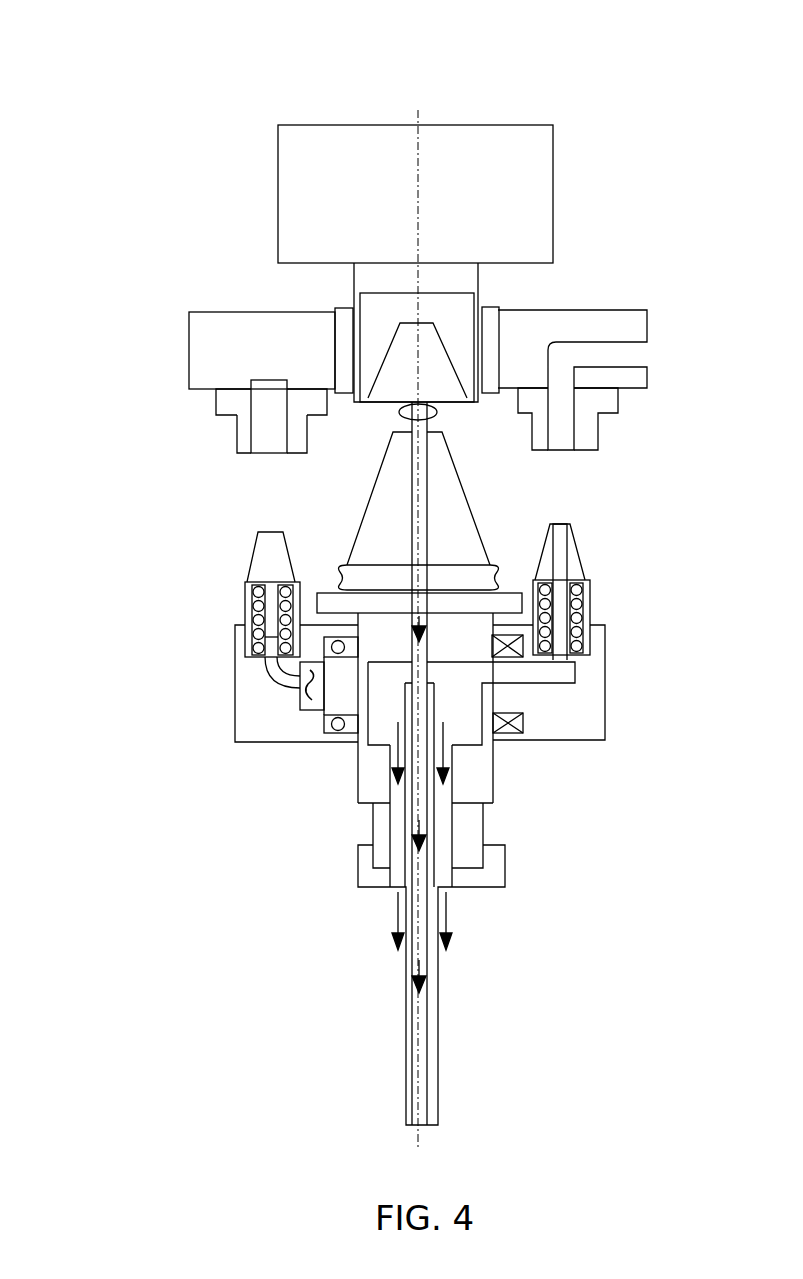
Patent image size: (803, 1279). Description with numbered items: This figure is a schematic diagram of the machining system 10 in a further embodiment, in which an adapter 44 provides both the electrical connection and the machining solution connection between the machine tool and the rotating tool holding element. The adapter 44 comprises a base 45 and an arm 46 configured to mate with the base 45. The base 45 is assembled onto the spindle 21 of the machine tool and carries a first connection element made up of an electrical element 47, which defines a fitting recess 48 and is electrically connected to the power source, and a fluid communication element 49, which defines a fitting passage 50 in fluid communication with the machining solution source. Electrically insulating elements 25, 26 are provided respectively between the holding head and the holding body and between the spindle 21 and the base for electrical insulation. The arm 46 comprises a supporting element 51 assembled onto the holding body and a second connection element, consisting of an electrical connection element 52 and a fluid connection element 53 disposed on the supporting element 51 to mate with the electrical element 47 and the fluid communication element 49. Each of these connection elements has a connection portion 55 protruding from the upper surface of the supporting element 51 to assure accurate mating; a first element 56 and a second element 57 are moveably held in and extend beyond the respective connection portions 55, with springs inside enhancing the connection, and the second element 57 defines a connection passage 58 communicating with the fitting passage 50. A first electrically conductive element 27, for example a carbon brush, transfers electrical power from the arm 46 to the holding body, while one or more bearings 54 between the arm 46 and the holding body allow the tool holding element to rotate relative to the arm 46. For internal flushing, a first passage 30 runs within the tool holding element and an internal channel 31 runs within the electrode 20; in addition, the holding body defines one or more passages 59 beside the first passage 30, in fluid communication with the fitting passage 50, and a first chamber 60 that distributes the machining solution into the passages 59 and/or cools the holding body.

The machining system 10 is at (216, 60).
The electrode 20 is at (405, 992).
The spindle 21 is at (277, 192).
The electrically insulating element 25 is at (328, 598).
The electrically insulating element 26 is at (491, 394).
The first electrically conductive element 27 is at (338, 692).
The first passage 30 is at (416, 646).
The internal channel 31 is at (430, 916).
The adapter 44 is at (82, 310).
The base 45 is at (218, 310).
The arm 46 is at (237, 692).
The electrical element 47 is at (194, 352).
The fitting recess 48 is at (258, 432).
The fluid communication element 49 is at (650, 327).
The fitting passage 50 is at (640, 352).
The supporting element 51 is at (607, 692).
The electrical connection element 52 is at (246, 592).
The fluid connection element 53 is at (590, 588).
The bearing 54 is at (340, 737).
The connection portion 55 is at (246, 617).
The first element 56 is at (258, 552).
The second element 57 is at (573, 550).
The connection passage 58 is at (553, 570).
The passage 59 is at (445, 823).
The first chamber 60 is at (476, 697).